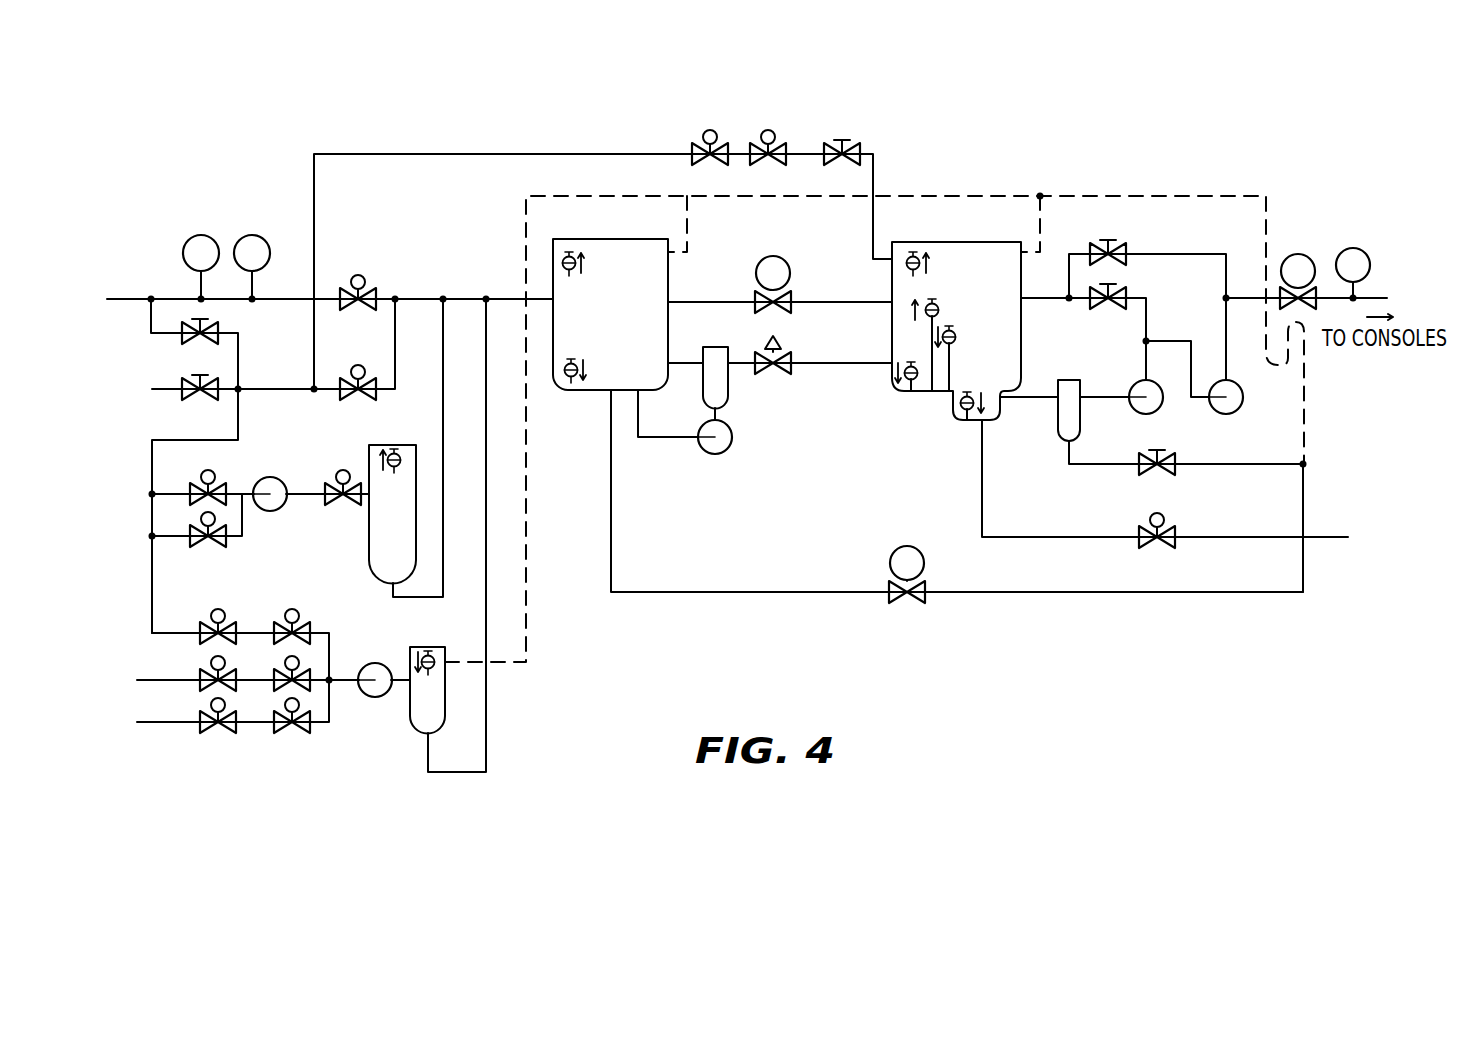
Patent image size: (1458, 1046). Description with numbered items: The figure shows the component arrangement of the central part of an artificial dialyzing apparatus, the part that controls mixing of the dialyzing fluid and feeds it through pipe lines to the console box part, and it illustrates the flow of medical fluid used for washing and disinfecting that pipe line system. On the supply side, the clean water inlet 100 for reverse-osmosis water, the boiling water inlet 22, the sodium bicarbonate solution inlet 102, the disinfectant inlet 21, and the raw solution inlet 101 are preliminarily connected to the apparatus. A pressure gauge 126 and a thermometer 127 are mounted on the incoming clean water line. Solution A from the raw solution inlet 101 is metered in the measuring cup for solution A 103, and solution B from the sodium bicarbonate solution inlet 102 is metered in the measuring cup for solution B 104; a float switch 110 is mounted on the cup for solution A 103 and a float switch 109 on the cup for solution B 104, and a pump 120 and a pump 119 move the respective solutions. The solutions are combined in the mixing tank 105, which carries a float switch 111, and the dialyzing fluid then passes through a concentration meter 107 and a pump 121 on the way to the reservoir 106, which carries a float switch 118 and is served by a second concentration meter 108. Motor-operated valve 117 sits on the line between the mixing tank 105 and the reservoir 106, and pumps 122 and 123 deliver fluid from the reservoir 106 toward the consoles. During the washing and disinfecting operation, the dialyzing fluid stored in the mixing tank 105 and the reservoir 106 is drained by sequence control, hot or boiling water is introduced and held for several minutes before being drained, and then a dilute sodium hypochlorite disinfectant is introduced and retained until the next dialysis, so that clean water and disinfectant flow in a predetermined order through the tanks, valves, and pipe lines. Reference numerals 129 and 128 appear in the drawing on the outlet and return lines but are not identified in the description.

The clean water inlet 100 is at (108, 300).
The boiling water inlet 22 is at (152, 390).
The sodium bicarbonate solution inlet 102 is at (150, 496).
The disinfectant inlet 21 is at (143, 681).
The raw solution inlet 101 is at (160, 723).
The pressure gauge 126 is at (187, 243).
The thermometer 127 is at (247, 235).
The pump 119 is at (277, 478).
The measuring cup for solution B 104 is at (369, 533).
The float switch 109 is at (394, 445).
The pump 120 is at (370, 697).
The measuring cup for solution A 103 is at (418, 732).
The float switch 110 is at (428, 651).
The mixing tank 105 is at (670, 282).
The float switch 111 is at (569, 252).
The motor-operated valve 117 is at (790, 262).
The concentration meter 107 is at (728, 398).
The pump 121 is at (728, 449).
The reservoir 106 is at (1022, 323).
The motor-operated valve 118 is at (913, 252).
The concentration meter 108 is at (1060, 438).
The pump 122 is at (1160, 406).
The pump 123 is at (1240, 405).
The pressure gauge 129 is at (1372, 302).
The line 128 is at (1328, 537).